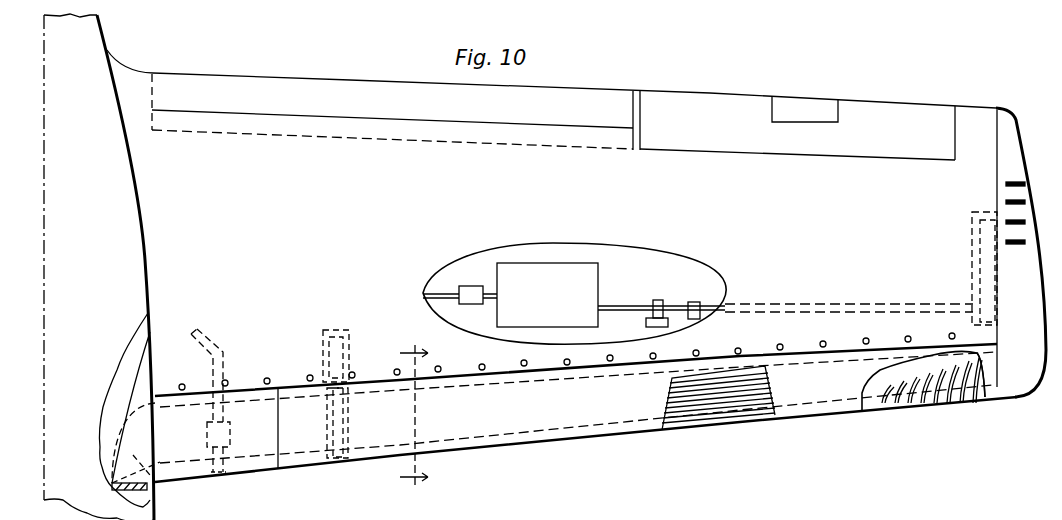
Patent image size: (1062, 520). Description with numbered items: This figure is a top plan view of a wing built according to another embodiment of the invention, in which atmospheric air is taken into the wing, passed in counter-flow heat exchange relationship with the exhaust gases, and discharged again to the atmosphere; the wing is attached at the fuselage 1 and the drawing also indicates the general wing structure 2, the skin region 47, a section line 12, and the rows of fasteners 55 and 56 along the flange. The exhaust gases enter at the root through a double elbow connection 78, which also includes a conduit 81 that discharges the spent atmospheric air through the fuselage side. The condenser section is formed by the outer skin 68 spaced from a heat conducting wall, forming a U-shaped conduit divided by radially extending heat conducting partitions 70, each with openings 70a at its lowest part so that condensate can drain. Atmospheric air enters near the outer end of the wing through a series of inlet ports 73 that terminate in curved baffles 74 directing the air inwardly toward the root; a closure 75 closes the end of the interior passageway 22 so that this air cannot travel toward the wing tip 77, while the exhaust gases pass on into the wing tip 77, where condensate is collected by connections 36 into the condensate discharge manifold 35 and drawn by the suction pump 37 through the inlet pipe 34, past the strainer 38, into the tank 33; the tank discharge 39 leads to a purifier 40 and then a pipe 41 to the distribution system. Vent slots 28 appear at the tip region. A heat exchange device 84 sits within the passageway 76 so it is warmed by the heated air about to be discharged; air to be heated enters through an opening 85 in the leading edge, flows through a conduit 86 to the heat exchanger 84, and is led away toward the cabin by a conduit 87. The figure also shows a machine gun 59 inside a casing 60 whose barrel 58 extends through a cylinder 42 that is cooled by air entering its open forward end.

The fuselage 1 is at (144, 177).
The wing panel 2 is at (708, 81).
The section line 12- 12 is at (432, 417).
The interior passageway 22 is at (873, 378).
The vent slots 28 is at (1015, 180).
The tank 33 is at (547, 295).
The inlet pipe 34 is at (848, 303).
The condensate discharge manifold 35 is at (972, 277).
The connections 36 is at (992, 258).
The suction pump 37 is at (656, 300).
The strainer 38 is at (693, 285).
The discharge 39 is at (489, 292).
The purifier 40 is at (472, 304).
The pipe 41 is at (445, 293).
The cylinder 42 is at (349, 420).
The skin panel 47 is at (551, 140).
The rivets 55 is at (525, 368).
The upper flange 56 is at (603, 368).
The barrel 58 is at (345, 460).
The machine gun 59 is at (329, 352).
The casing 60 is at (338, 330).
The outer skin 68 is at (634, 432).
The heat conducting partitions 70 is at (748, 415).
The openings 70a is at (713, 418).
The inlet ports 73 is at (940, 406).
The curved baffles 74 is at (984, 374).
The closure 75 is at (1010, 396).
The passageway 76 is at (551, 433).
The wing tip 77 is at (997, 93).
The double elbow connection 78 is at (121, 432).
The conduit 81 is at (150, 492).
The heat exchange device 84 is at (228, 422).
The opening 85 is at (219, 471).
The conduit 86 is at (223, 455).
The conduit 87 is at (216, 343).